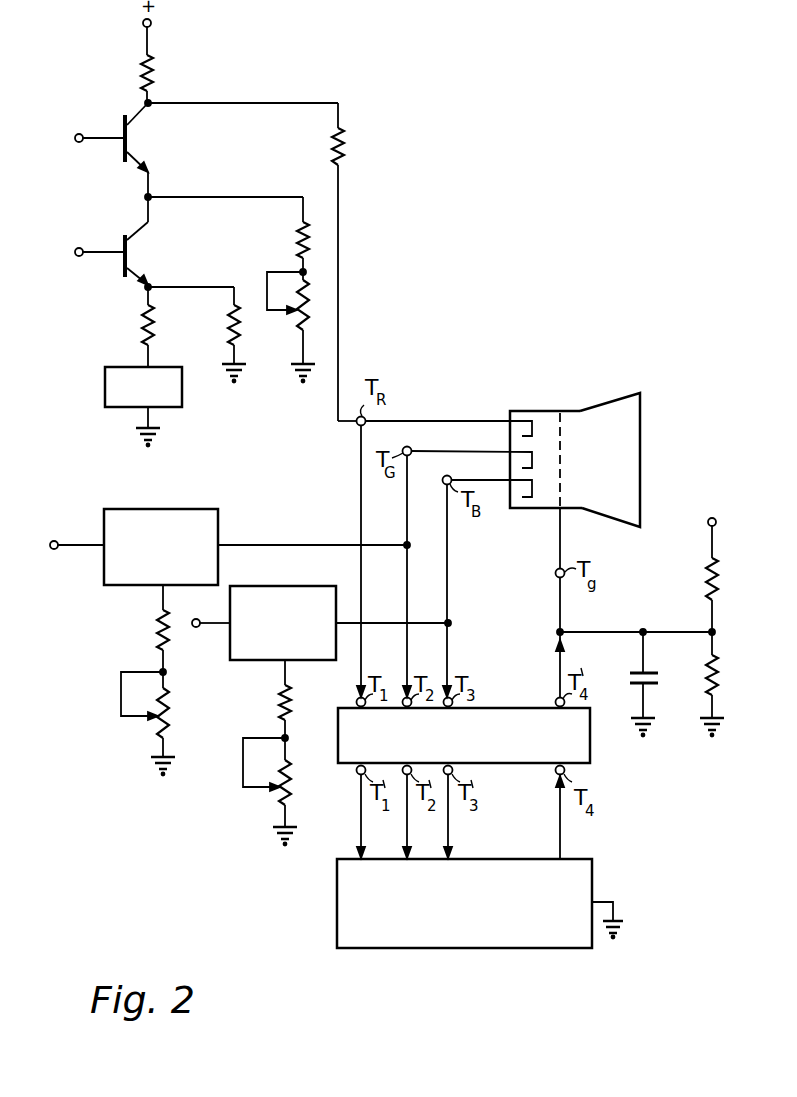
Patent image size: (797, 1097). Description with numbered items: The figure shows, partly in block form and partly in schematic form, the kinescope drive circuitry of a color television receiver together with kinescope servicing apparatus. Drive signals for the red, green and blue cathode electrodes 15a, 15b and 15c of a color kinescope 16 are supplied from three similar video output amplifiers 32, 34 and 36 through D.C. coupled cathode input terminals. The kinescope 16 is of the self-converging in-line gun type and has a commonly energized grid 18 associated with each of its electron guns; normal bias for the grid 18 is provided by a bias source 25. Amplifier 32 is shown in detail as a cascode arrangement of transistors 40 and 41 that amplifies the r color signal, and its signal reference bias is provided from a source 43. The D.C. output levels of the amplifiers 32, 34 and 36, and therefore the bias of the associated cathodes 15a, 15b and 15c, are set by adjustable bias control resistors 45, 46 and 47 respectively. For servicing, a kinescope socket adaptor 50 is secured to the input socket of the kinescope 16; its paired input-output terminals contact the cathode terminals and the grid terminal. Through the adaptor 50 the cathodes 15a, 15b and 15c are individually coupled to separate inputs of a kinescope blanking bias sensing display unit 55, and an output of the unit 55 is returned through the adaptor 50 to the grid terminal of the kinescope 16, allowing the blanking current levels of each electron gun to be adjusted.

The video output amplifier 32 is at (224, 85).
The transistor 41 is at (161, 152).
The transistor 40 is at (163, 267).
The adjustable bias control resistor 45 is at (285, 262).
The bias source 43 is at (182, 405).
The video output amplifier 34 is at (190, 509).
The video output amplifier 36 is at (306, 660).
The adjustable bias control resistor 46 is at (138, 663).
The adjustable bias control resistor 47 is at (265, 727).
The kinescope socket adaptor 50 is at (338, 741).
The kinescope blanking bias sensing display unit 55 is at (484, 948).
The bias source 25 is at (738, 746).
The cathode electrode 15a is at (537, 423).
The cathode electrode 15b is at (522, 452).
The cathode electrode 15c is at (537, 505).
The grid 18 is at (562, 424).
The color kinescope 16 is at (642, 408).